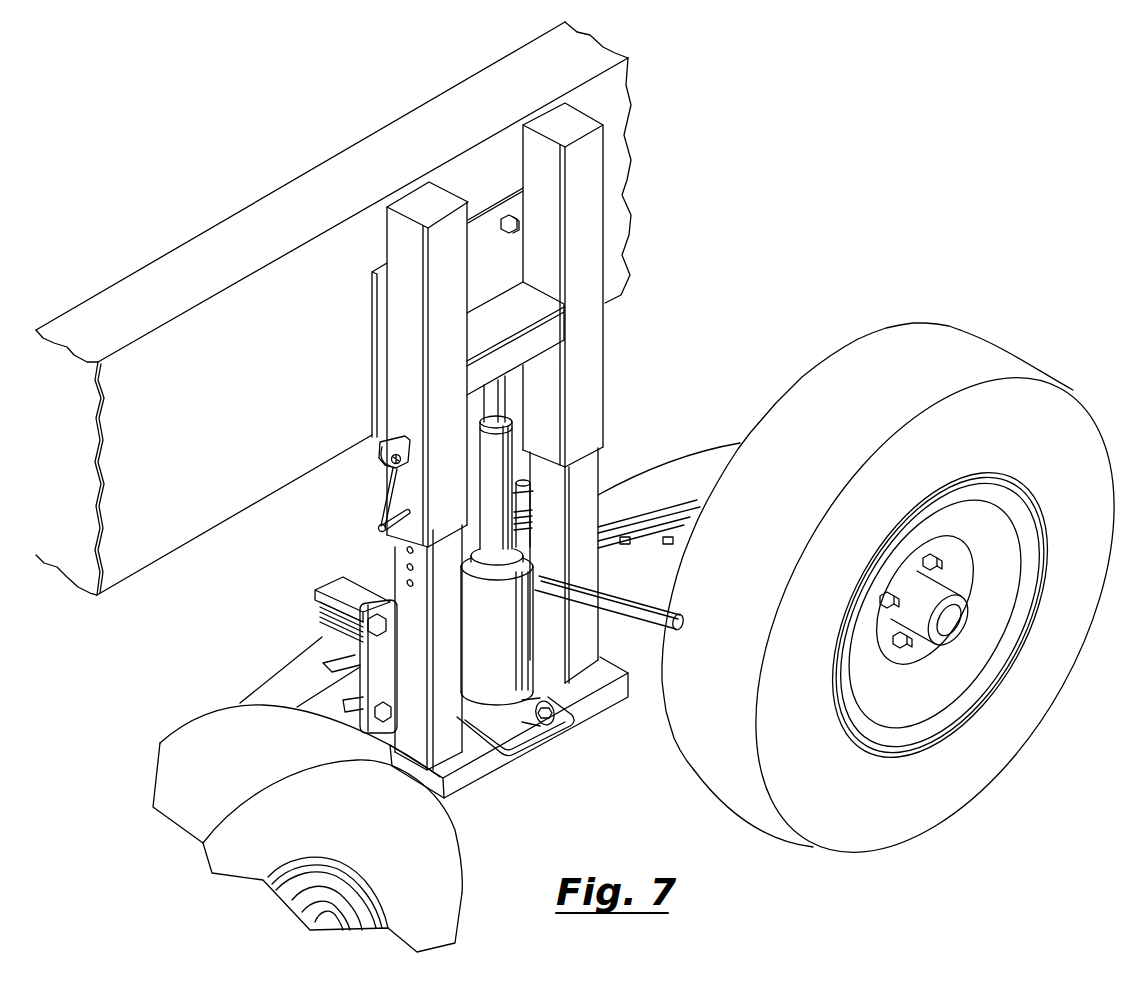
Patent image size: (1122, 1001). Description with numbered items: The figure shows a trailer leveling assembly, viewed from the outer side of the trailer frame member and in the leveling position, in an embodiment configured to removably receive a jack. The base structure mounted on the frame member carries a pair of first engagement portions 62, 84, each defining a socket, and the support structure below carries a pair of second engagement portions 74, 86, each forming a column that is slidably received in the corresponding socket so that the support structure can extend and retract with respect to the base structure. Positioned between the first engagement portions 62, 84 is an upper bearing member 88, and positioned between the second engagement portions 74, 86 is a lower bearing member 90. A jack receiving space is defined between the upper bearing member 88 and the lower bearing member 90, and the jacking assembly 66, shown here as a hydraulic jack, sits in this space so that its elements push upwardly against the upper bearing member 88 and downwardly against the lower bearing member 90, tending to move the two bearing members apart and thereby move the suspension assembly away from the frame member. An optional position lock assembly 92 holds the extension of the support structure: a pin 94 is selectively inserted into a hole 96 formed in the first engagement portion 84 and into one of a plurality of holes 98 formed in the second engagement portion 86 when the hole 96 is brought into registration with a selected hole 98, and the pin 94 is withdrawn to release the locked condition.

The first engagement portion 62 is at (583, 383).
The jacking assembly 66 is at (507, 647).
The second engagement portion 74 is at (577, 553).
The first engagement portion 84 is at (415, 405).
The second engagement portion 86 is at (440, 723).
The upper bearing member 88 is at (546, 327).
The lower bearing member 90 is at (545, 745).
The position lock assembly 92 is at (341, 509).
The pin 94 is at (380, 524).
The hole 96 is at (398, 503).
The holes 98 is at (405, 566).